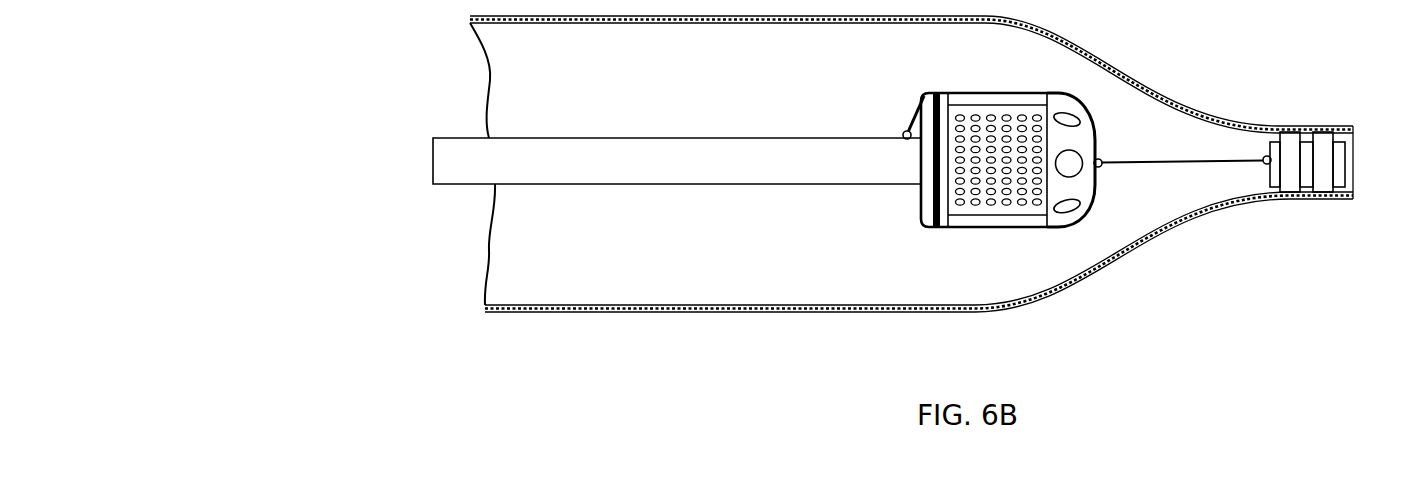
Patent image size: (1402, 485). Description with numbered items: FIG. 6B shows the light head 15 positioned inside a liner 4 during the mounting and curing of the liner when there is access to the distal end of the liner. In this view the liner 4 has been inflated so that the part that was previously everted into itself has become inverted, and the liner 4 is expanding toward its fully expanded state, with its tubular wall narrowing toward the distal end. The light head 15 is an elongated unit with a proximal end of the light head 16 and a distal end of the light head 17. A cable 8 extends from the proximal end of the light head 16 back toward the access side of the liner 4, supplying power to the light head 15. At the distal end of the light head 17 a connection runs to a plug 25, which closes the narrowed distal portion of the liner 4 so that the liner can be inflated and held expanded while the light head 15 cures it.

The liner 4 is at (538, 312).
The power cable 8 is at (620, 184).
The light head 15 is at (1027, 227).
The proximal end of light head 16 is at (920, 202).
The distal end of light head 17 is at (1090, 190).
The plug 25 is at (1357, 161).